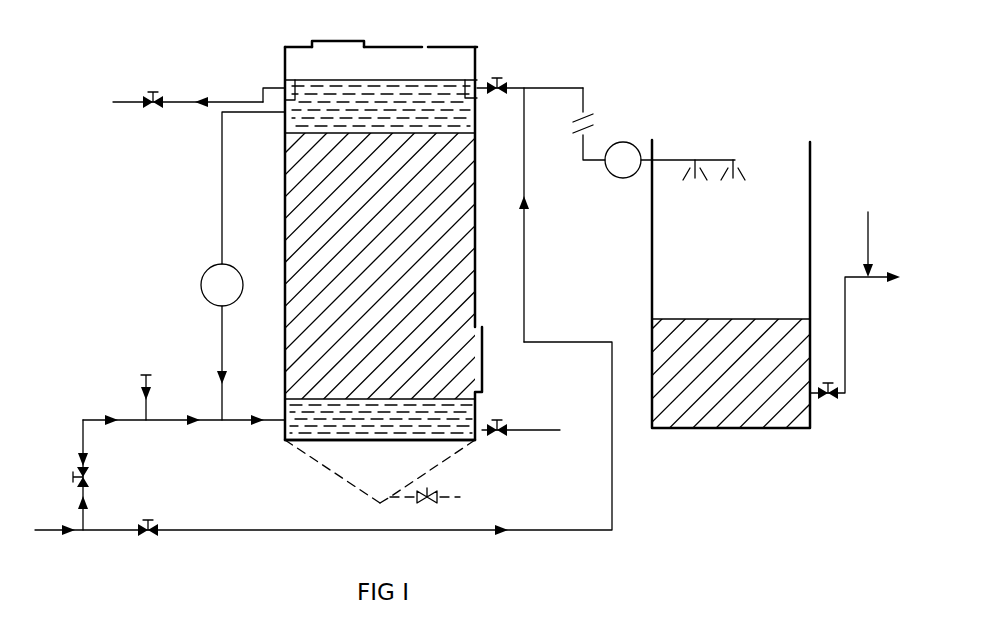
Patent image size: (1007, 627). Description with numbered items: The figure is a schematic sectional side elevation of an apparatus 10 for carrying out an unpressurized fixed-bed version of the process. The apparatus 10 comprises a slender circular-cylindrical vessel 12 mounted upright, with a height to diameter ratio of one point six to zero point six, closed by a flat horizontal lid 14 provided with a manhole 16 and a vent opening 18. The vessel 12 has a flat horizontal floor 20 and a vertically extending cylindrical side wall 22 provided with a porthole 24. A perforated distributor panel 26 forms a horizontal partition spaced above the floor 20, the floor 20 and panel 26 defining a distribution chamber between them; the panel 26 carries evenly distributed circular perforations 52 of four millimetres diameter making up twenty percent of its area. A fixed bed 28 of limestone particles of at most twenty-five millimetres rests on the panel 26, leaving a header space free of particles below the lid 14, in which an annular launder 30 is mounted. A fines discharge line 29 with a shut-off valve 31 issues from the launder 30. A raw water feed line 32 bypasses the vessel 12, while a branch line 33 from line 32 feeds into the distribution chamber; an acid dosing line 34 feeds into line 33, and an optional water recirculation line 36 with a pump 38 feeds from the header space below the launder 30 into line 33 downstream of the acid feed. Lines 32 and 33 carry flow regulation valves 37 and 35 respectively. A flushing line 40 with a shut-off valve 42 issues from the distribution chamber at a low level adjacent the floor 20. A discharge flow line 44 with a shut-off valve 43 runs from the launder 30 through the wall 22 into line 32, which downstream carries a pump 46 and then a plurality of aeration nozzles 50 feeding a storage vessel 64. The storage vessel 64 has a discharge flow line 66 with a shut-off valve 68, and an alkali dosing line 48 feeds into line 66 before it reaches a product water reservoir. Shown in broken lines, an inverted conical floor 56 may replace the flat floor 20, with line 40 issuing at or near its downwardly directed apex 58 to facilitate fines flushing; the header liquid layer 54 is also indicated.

The apparatus 10 is at (694, 54).
The vessel 12 is at (495, 285).
The lid 14 is at (400, 46).
The manhole 16 is at (339, 30).
The vent opening 18 is at (425, 44).
The floor 20 is at (437, 440).
The side wall 22 is at (476, 306).
The porthole 24 is at (498, 362).
The perforated distributor panel 26 is at (317, 400).
The fixed bed 28 is at (452, 231).
The fines discharge line 29 is at (130, 100).
The annular launder 30 is at (280, 79).
The shut-off valve 31 is at (152, 112).
The raw water feed line 32 is at (585, 102).
The branch line 33 is at (83, 436).
The acid dosing line 34 is at (144, 384).
The flow regulation valve 35 is at (92, 478).
The water recirculation line 36 is at (220, 230).
The flow regulation valve 37 is at (150, 540).
The pump 38 is at (214, 285).
The flushing line 40 is at (452, 500).
The shut-off valve 42 is at (510, 410).
The shut-off valve 43 is at (498, 80).
The discharge flow line 44 is at (519, 86).
The pump 46 is at (627, 152).
The alkali dosing line 48 is at (846, 239).
The aeration nozzles 50 is at (734, 200).
The perforations 52 is at (407, 405).
The upper liquid layer 54 is at (312, 98).
The inverted conical floor 56 is at (312, 462).
The apex 58 is at (378, 503).
The storage vessel 64 is at (647, 272).
The discharge flow line 66 is at (846, 346).
The shut-off valve 68 is at (832, 398).